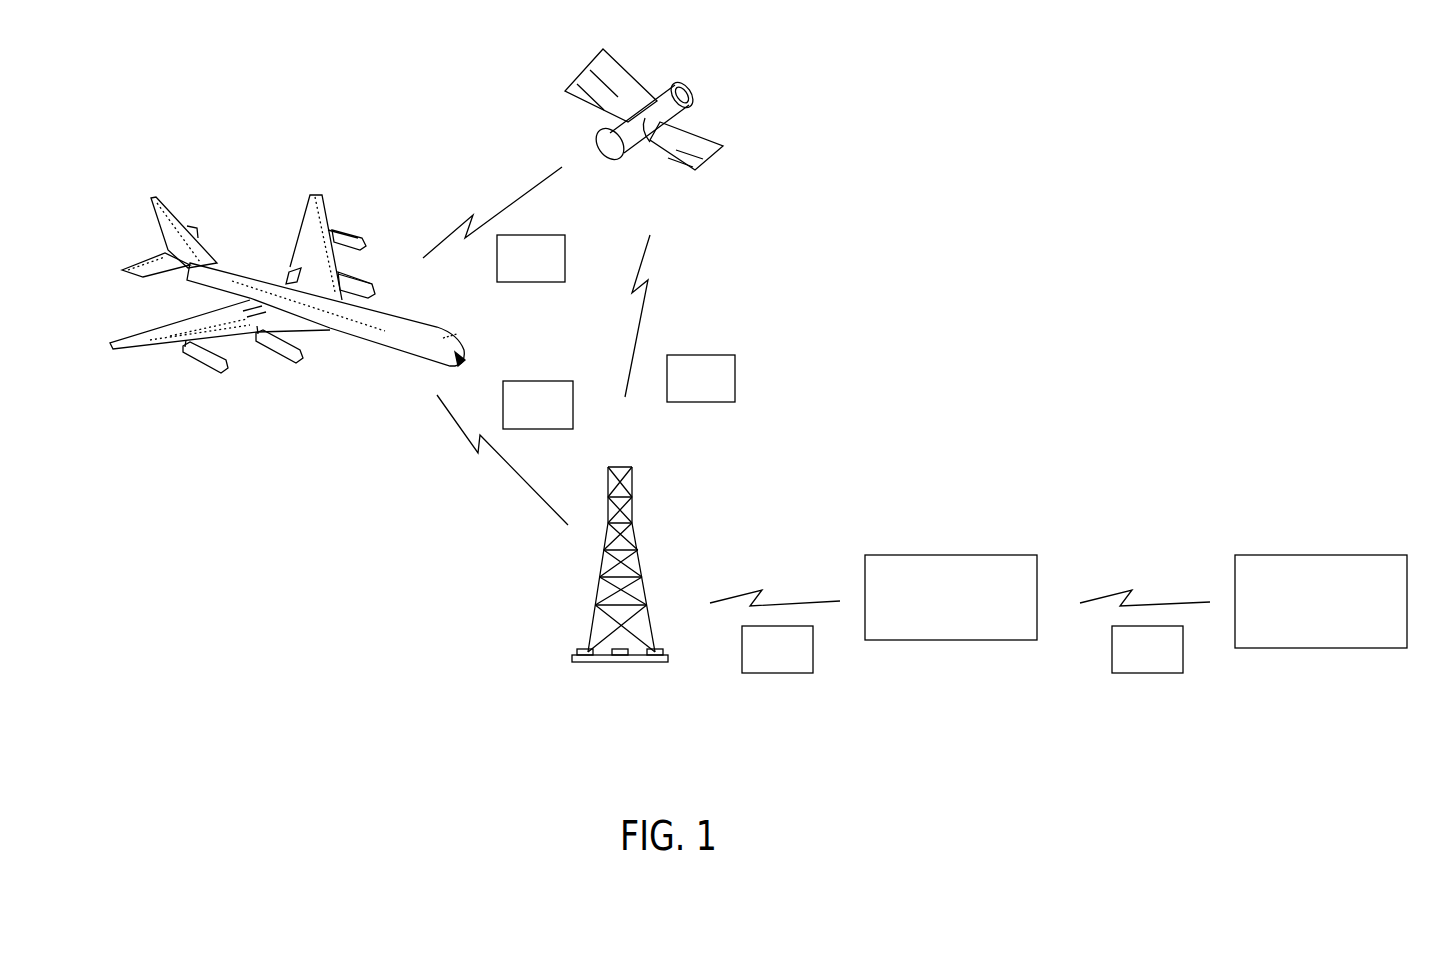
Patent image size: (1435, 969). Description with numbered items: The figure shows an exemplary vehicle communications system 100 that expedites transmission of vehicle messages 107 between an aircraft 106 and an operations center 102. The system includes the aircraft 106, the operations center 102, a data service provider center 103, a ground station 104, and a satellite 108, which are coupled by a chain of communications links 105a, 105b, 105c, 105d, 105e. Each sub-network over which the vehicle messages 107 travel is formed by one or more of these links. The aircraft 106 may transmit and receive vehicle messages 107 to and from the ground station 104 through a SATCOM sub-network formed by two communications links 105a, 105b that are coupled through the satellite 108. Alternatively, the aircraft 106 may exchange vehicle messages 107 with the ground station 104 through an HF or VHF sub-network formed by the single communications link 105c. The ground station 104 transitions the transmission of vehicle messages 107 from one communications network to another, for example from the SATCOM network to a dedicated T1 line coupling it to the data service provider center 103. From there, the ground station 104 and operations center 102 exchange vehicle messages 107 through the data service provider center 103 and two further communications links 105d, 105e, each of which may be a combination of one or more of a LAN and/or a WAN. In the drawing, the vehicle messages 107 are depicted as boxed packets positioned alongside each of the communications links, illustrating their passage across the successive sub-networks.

The vehicle communications system 100 is at (1042, 122).
The operations center 102 is at (1343, 637).
The data service provider (DSP) center 103 is at (973, 622).
The ground station 104 is at (647, 747).
The communications link 105a is at (492, 209).
The communications link 105b is at (612, 316).
The communications link 105c is at (502, 460).
The communications link 105d is at (775, 590).
The communications link 105e is at (1145, 590).
The aircraft 106 is at (348, 402).
The vehicle messages 107 is at (840, 454).
The satellite 108 is at (805, 62).